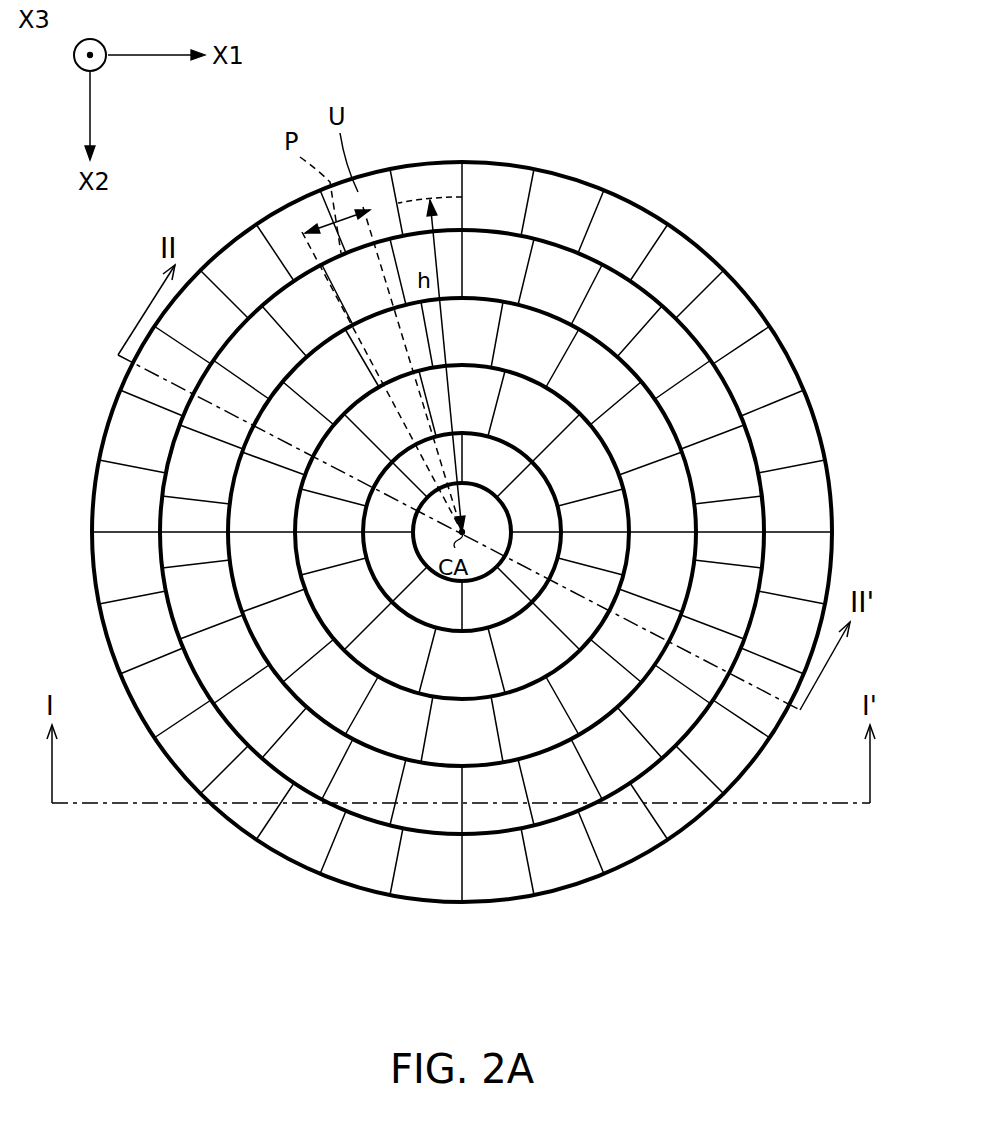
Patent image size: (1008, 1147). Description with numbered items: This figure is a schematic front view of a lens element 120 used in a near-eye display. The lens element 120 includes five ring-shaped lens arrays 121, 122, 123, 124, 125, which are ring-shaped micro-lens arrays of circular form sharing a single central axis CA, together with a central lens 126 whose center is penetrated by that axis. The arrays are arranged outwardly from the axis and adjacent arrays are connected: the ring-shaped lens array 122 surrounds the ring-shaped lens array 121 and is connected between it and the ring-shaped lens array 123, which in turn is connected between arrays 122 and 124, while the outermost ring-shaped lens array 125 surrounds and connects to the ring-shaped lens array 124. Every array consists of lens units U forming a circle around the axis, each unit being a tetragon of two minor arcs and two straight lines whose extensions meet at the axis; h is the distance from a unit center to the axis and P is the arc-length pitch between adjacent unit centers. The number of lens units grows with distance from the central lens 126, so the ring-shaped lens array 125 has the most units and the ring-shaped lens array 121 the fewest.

The lens element 120 is at (499, 533).
The ring-shaped lens array 121 is at (530, 500).
The ring-shaped lens array 122 is at (577, 472).
The ring-shaped lens array 123 is at (636, 447).
The ring-shaped lens array 124 is at (718, 470).
The ring-shaped lens array 125 is at (800, 502).
The central lens 126 is at (470, 507).